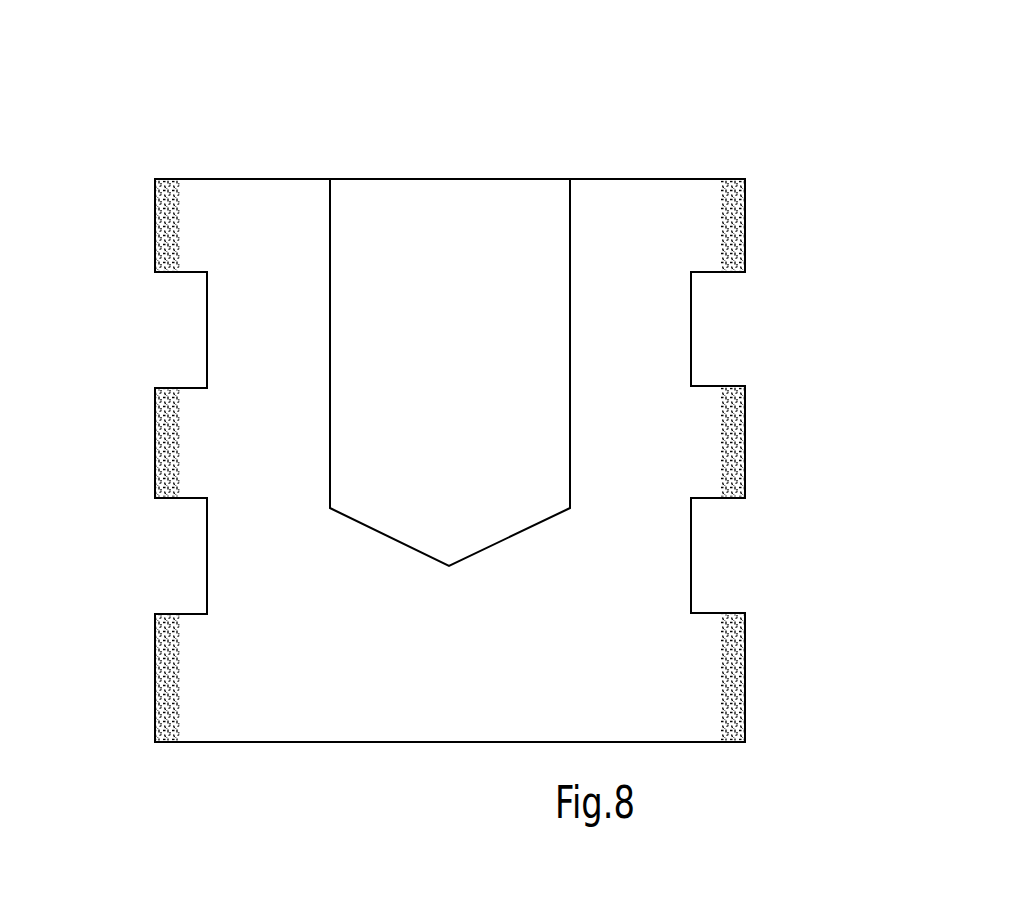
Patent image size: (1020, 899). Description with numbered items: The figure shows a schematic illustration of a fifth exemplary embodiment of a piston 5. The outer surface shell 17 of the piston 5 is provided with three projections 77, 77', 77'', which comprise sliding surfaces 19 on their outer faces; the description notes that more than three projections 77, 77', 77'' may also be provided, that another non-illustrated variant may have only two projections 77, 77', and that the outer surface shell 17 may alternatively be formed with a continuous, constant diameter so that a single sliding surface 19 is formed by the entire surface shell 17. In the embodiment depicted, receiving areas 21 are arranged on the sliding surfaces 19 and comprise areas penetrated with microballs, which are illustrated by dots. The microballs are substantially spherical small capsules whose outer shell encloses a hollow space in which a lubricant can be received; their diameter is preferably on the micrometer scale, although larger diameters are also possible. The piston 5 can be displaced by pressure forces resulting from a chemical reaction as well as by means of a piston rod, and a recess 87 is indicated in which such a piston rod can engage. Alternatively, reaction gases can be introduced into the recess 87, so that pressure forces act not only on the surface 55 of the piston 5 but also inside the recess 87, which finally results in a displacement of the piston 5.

The piston 5 is at (667, 135).
The surface 55 is at (265, 178).
The recess 87 is at (388, 218).
The sliding surfaces 19 is at (155, 202).
The receiving areas 21 is at (748, 242).
The outer surface shell 17 is at (207, 328).
The projection 77'' is at (112, 252).
The projection 77' is at (125, 531).
The projection 77 is at (149, 806).